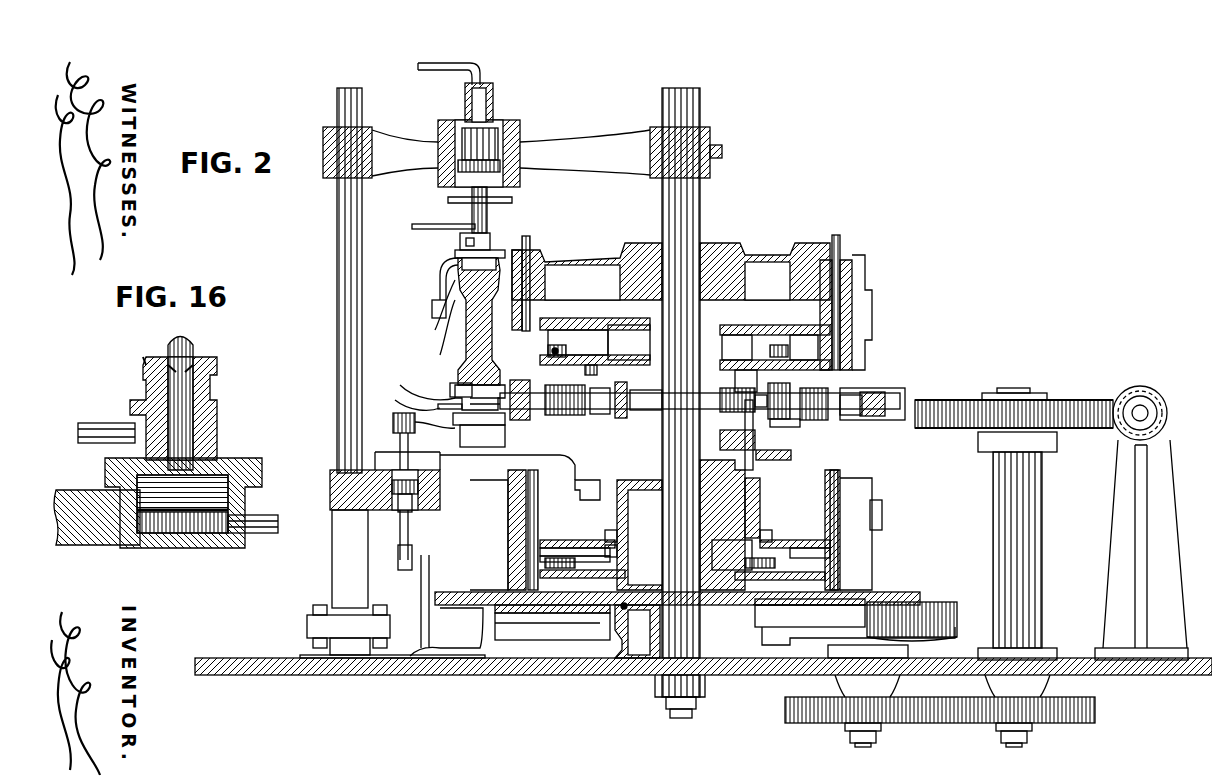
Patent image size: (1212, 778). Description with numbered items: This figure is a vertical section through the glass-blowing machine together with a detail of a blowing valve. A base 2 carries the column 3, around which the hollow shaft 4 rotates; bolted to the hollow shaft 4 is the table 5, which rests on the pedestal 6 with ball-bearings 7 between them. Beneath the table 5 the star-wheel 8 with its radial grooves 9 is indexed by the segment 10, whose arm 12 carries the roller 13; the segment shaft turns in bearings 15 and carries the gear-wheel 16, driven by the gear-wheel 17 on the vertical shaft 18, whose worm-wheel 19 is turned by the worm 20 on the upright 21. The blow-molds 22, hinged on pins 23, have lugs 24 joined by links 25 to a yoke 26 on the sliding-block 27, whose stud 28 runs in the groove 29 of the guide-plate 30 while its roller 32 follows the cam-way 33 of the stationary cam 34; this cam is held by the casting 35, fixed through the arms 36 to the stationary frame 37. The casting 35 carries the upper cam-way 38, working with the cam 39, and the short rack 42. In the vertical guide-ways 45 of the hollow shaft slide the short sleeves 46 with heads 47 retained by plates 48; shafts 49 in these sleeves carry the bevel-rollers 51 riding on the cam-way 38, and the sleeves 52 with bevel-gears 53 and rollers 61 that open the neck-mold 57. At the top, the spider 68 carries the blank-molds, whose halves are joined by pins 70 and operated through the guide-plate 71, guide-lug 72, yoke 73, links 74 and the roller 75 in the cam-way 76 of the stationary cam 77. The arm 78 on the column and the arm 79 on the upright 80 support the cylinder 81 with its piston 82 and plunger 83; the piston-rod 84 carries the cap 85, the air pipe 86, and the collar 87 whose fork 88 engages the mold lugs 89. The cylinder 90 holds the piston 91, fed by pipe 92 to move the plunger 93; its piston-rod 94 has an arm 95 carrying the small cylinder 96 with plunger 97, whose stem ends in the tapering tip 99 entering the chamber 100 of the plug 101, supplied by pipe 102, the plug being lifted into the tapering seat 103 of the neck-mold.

In FIG. 2, the base 2 is at (549, 676).
In FIG. 2, the column 3 is at (701, 193).
In FIG. 2, the hollow shaft 4 is at (681, 525).
In FIG. 2, the table 5 is at (458, 605).
In FIG. 2, the pedestal 6 is at (610, 636).
In FIG. 2, the ball-bearings 7 is at (637, 630).
In FIG. 2, the star-wheel 8 is at (519, 613).
In FIG. 2, the radial grooves 9 is at (537, 614).
In FIG. 2, the segment 10 is at (945, 615).
In FIG. 2, the arm 12 is at (785, 637).
In FIG. 2, the roller 13 is at (782, 617).
In FIG. 2, the bearings 15 is at (908, 652).
In FIG. 2, the gear-wheel 16 is at (812, 724).
In FIG. 2, the gear-wheel 17 is at (1062, 724).
In FIG. 2, the vertical shaft 18 is at (1013, 390).
In FIG. 2, the worm-wheel 19 is at (1065, 404).
In FIG. 2, the worm 20 is at (1168, 412).
In FIG. 2, the upright 21 is at (1118, 512).
In FIG. 2, the blow-molds 22 is at (497, 556).
In FIG. 2, the pins 23 is at (548, 510).
In FIG. 2, the lugs 24 is at (845, 553).
In FIG. 2, the links 25 is at (563, 540).
In FIG. 2, the yoke 26 is at (780, 579).
In FIG. 2, the sliding-block 27 is at (660, 555).
In FIG. 2, the stud 28 is at (731, 555).
In FIG. 2, the groove 29 is at (612, 558).
In FIG. 2, the guide-plate 30 is at (582, 577).
In FIG. 2, the roller 32 is at (612, 525).
In FIG. 2, the cam-way 33 is at (612, 550).
In FIG. 2, the stationary cam 34 is at (620, 540).
In FIG. 2, the casting 35 is at (760, 491).
In FIG. 2, the arms 36 is at (583, 487).
In FIG. 2, the stationary frame 37 is at (421, 602).
In FIG. 2, the cam-way 38 is at (586, 418).
In FIG. 2, the cam 39 is at (743, 381).
In FIG. 2, the short rack 42 is at (812, 428).
In FIG. 2, the vertical guide-ways 45 is at (737, 435).
In FIG. 2, the short sleeves 46 is at (680, 412).
In FIG. 2, the heads 47 is at (790, 430).
In FIG. 2, the plates 48 is at (792, 455).
In FIG. 2, the shafts 49 is at (522, 402).
In FIG. 2, the bevel-rollers 51 is at (570, 410).
In FIG. 2, the sleeves 52 is at (533, 420).
In FIG. 2, the bevel-gears 53 is at (575, 402).
In FIG. 2, the neck-mold 57 is at (450, 390).
In FIG. 2, the rollers 61 is at (590, 365).
In FIG. 2, the spider 68 is at (730, 262).
In FIG. 2, the pins 70 is at (530, 245).
In FIG. 2, the guide-plate 71 is at (575, 330).
In FIG. 2, the guide-lug 72 is at (592, 322).
In FIG. 2, the yoke 73 is at (562, 318).
In FIG. 2, the links 74 is at (805, 345).
In FIG. 2, the roller 75 is at (760, 292).
In FIG. 2, the cam-way 76 is at (804, 355).
In FIG. 2, the stationary cam 77 is at (732, 348).
In FIG. 2, the arm 78 is at (590, 145).
In FIG. 2, the arm 79 is at (386, 148).
In FIG. 2, the upright 80 is at (392, 584).
In FIG. 2, the cylinder 81 is at (500, 152).
In FIG. 2, the piston 82 is at (520, 165).
In FIG. 2, the plunger 83 is at (480, 113).
In FIG. 2, the piston-rod 84 is at (472, 208).
In FIG. 2, the cap 85 is at (496, 255).
In FIG. 2, the pipe 86 is at (424, 224).
In FIG. 2, the collar 87 is at (490, 240).
In FIG. 2, the fork 88 is at (440, 270).
In FIG. 2, the lugs 89 is at (432, 305).
In FIG. 2, the cylinder 90 is at (420, 488).
In FIG. 2, the piston 91 is at (340, 482).
In FIG. 2, the pipe 92 is at (400, 562).
In FIG. 2, the plunger 93 is at (415, 505).
In FIG. 2, the piston-rod 94 is at (400, 440).
In FIG. 2, the arm 95 is at (430, 428).
In FIG. 16, the arm 95 is at (80, 538).
In FIG. 2, the small cylinder 96 is at (479, 430).
In FIG. 16, the small cylinder 96 is at (240, 497).
In FIG. 16, the plunger 97 is at (187, 512).
In FIG. 16, the tapering tip 99 is at (195, 345).
In FIG. 16, the chamber 100 is at (219, 400).
In FIG. 2, the plug 101 is at (417, 380).
In FIG. 16, the plug 101 is at (150, 373).
In FIG. 2, the pipe 102 is at (413, 395).
In FIG. 16, the pipe 102 is at (100, 423).
In FIG. 2, the tapering seat 103 is at (460, 382).